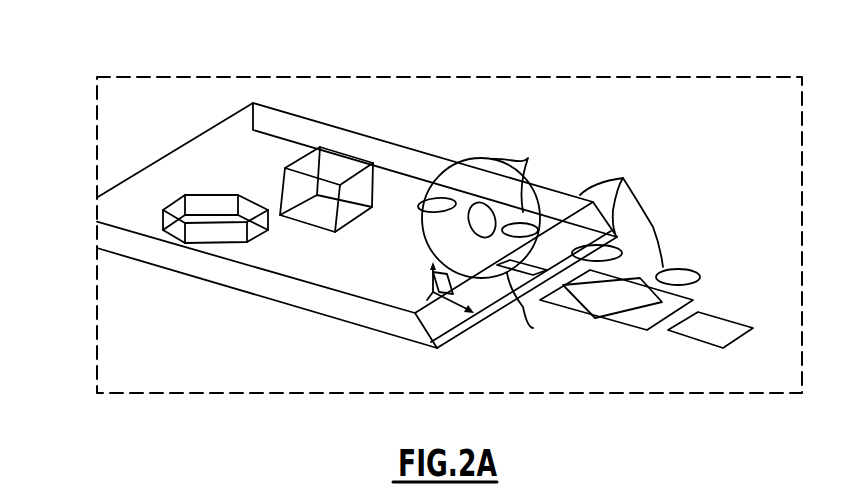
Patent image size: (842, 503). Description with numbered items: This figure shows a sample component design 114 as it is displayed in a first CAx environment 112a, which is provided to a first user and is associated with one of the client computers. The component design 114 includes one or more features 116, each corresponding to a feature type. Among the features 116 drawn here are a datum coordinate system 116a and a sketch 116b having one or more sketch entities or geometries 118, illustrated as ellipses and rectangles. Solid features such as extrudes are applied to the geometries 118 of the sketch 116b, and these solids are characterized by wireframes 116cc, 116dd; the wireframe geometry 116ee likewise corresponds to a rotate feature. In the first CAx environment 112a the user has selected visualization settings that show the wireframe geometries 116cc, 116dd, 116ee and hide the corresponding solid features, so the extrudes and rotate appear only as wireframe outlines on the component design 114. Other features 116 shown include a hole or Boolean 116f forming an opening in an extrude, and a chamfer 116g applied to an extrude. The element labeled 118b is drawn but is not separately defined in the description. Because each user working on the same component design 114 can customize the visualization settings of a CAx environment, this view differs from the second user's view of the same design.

The first CAx environment 112a is at (121, 72).
The component design 114 is at (183, 131).
The features 116 is at (636, 225).
The datum coordinate system 116a is at (428, 287).
The sketch 116b is at (711, 287).
The wireframe 116cc is at (418, 142).
The wireframe 116dd is at (355, 148).
The wireframe geometry 116ee is at (510, 157).
The hole or Boolean 116f is at (207, 199).
The chamfer 116g is at (430, 326).
The sketch entities or geometries 118 is at (510, 275).
The connector tip 118b is at (528, 158).